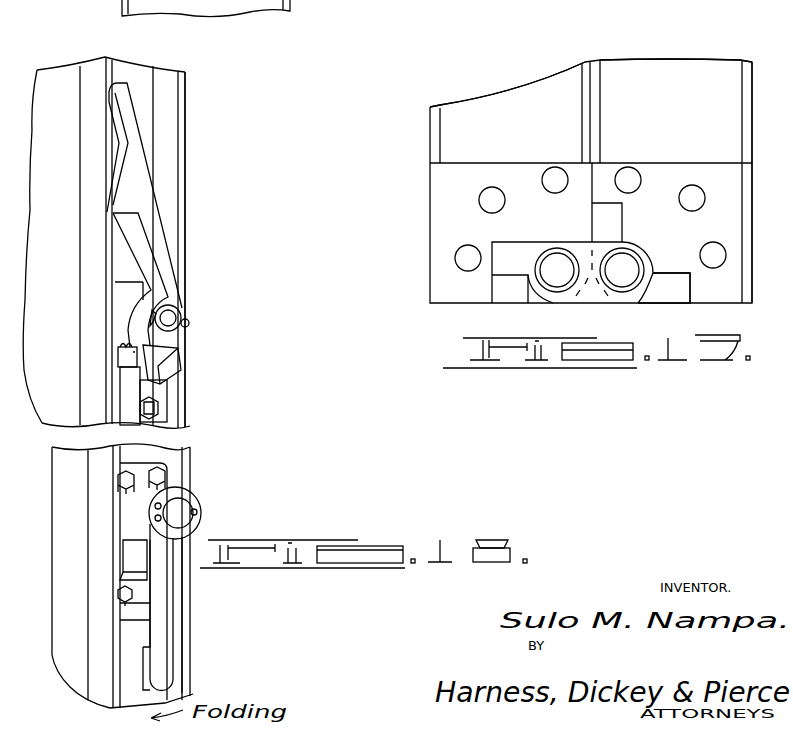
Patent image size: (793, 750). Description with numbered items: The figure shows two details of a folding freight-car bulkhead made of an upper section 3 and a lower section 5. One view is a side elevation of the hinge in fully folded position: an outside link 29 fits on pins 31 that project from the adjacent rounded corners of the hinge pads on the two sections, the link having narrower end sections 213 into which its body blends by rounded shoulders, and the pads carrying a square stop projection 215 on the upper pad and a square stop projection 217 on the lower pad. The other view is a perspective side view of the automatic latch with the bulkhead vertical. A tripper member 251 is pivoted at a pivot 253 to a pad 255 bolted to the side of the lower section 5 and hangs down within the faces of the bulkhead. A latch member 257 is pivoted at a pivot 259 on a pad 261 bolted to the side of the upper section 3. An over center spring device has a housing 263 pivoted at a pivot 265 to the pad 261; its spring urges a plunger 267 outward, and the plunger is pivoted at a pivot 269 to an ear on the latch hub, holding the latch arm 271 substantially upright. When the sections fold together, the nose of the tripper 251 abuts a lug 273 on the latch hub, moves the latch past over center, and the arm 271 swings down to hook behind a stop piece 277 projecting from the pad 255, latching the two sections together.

In FIG. 18, the upper section 3 is at (198, 161).
In FIG. 17, the upper section 3 is at (712, 33).
In FIG. 18, the lower section 5 is at (199, 474).
In FIG. 17, the lower section 5 is at (531, 67).
In FIG. 17, the outside link 29 is at (653, 309).
In FIG. 17, the pins 31 is at (622, 283).
In FIG. 17, the end sections 213 is at (507, 248).
In FIG. 17, the square stop projection 215 is at (607, 222).
In FIG. 17, the square stop projection 217 is at (515, 293).
In FIG. 18, the tripper member 251 is at (167, 621).
In FIG. 18, the pivot 253 is at (180, 505).
In FIG. 18, the pad 255 is at (128, 512).
In FIG. 18, the latch member 257 is at (176, 254).
In FIG. 18, the pivot 259 is at (185, 318).
In FIG. 18, the pad 261 is at (123, 292).
In FIG. 18, the housing 263 is at (126, 388).
In FIG. 18, the pivot 265 is at (160, 406).
In FIG. 18, the plunger 267 is at (122, 362).
In FIG. 18, the pivot 269 is at (128, 348).
In FIG. 18, the latch arm 271 is at (157, 218).
In FIG. 18, the lug 273 is at (166, 362).
In FIG. 18, the stop piece 277 is at (133, 556).